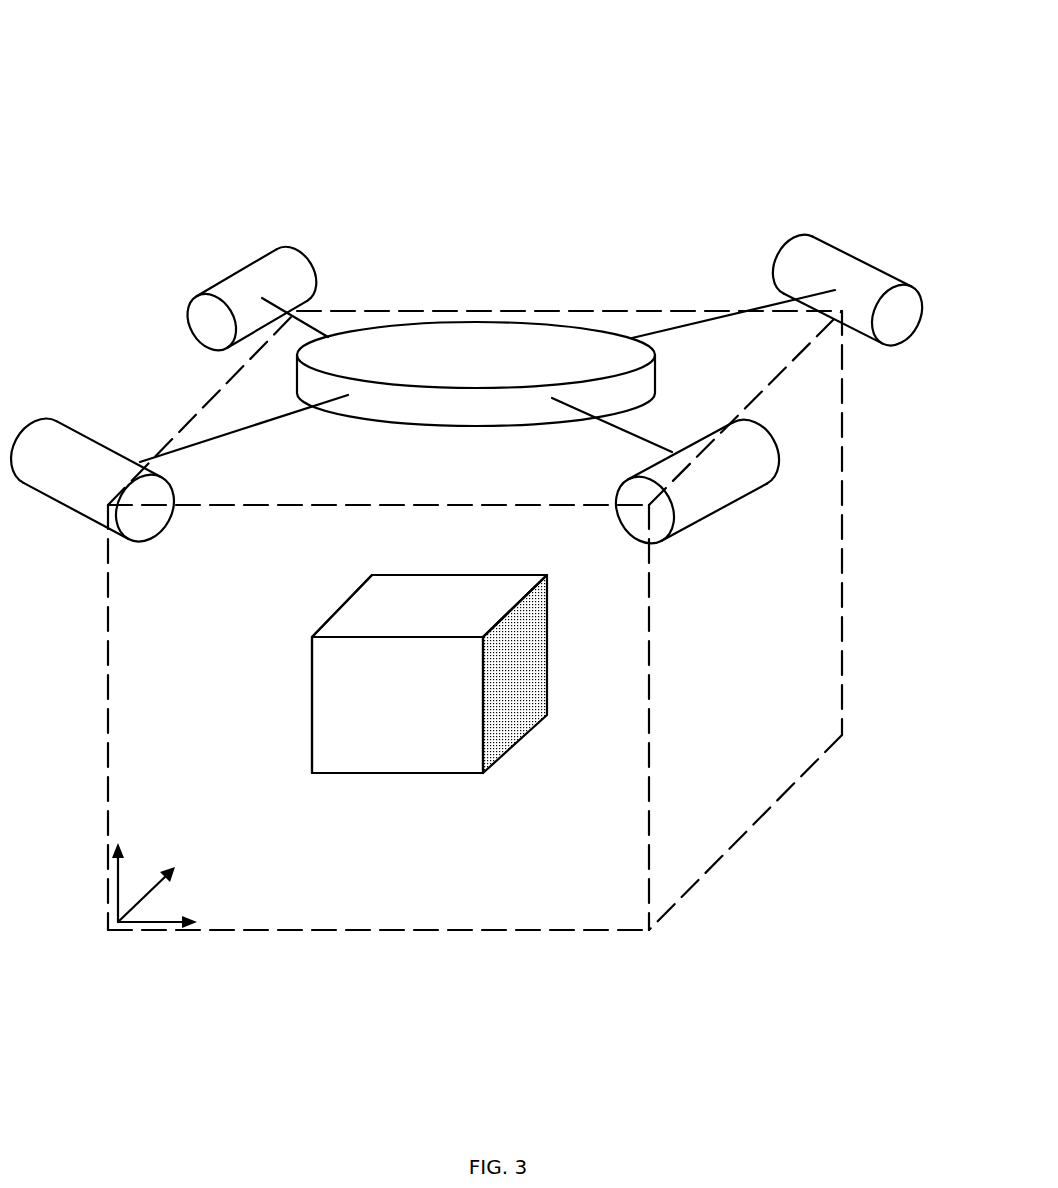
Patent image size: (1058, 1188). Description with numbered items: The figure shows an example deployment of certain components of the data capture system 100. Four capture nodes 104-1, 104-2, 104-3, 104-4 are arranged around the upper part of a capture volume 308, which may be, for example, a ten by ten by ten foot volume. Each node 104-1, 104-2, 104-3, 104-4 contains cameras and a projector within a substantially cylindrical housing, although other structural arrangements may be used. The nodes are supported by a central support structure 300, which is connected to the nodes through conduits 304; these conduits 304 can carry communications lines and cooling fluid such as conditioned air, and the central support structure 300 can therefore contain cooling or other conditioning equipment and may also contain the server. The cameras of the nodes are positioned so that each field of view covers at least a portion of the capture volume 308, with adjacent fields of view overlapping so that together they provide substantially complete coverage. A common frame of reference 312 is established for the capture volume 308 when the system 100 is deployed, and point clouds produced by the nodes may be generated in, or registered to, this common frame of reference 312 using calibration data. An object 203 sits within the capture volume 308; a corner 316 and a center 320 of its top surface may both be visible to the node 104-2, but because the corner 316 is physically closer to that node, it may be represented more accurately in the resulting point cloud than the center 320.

The system 100 is at (643, 97).
The capture node 104-1 is at (278, 247).
The capture node 104-2 is at (65, 419).
The capture node 104-3 is at (700, 522).
The capture node 104-4 is at (875, 263).
The central support structure 300 is at (510, 340).
The conduit 304 is at (641, 442).
The capture volume 308 is at (757, 825).
The common frame of reference 312 is at (134, 923).
The corner 316 is at (312, 637).
The center 320 is at (427, 605).
The object 203 is at (453, 745).